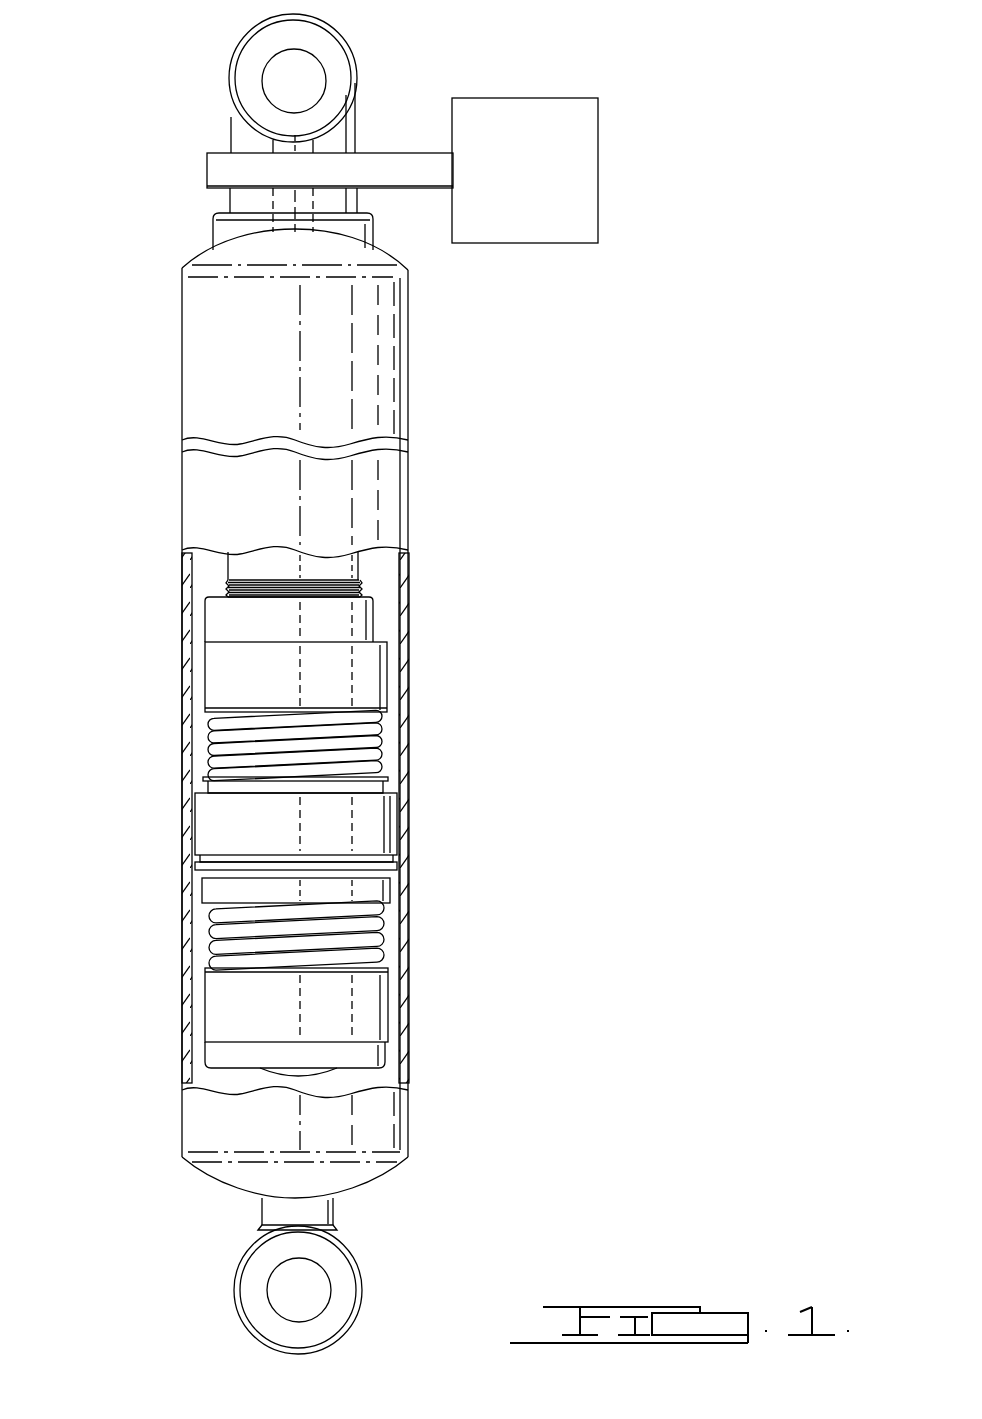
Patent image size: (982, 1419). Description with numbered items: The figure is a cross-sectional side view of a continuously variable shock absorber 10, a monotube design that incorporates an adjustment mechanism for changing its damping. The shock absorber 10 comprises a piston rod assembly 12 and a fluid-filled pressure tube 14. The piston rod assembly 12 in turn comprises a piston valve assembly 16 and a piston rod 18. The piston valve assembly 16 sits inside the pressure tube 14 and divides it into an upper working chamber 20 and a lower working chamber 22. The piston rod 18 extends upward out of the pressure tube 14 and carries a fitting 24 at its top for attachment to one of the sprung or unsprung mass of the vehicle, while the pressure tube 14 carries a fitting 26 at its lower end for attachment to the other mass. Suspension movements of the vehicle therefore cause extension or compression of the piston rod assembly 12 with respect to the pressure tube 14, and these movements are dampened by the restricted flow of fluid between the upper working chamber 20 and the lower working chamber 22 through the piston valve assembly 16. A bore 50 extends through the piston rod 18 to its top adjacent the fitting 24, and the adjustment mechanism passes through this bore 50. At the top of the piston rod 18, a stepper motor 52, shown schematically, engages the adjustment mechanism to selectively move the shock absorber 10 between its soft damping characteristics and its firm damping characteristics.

The shock absorber 10 is at (476, 434).
The piston rod assembly 12 is at (196, 745).
The pressure tube 14 is at (407, 1034).
The piston valve assembly 16 is at (390, 823).
The piston rod 18 is at (350, 568).
The upper working chamber 20 is at (388, 621).
The lower working chamber 22 is at (388, 933).
The fitting 24 is at (350, 42).
The fitting 26 is at (237, 1287).
The bore 50 is at (290, 200).
The stepper motor 52 is at (538, 181).